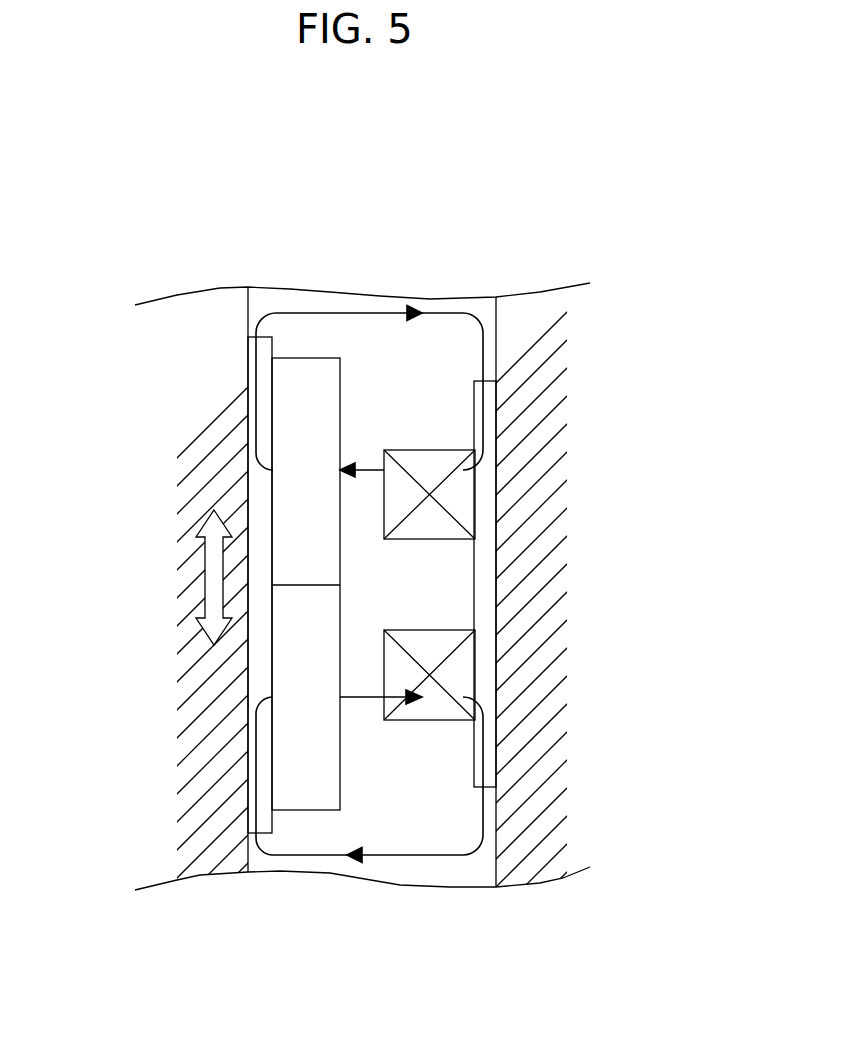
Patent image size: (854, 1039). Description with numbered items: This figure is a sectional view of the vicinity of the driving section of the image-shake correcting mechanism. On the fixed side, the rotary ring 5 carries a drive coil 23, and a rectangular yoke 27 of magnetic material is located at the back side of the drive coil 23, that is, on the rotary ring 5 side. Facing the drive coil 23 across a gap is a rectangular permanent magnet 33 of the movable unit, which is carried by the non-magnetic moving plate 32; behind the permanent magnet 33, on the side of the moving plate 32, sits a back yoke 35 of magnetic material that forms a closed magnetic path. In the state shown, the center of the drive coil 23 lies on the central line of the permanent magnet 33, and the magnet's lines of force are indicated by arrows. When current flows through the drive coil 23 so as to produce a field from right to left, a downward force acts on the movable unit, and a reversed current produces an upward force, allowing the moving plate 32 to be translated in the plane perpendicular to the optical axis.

The rotary ring 5 is at (544, 349).
The drive coil 23 is at (458, 676).
The yoke 27 is at (488, 530).
The moving plate 32 is at (201, 796).
The permanent magnet 33 is at (307, 383).
The back yoke 35 is at (258, 496).